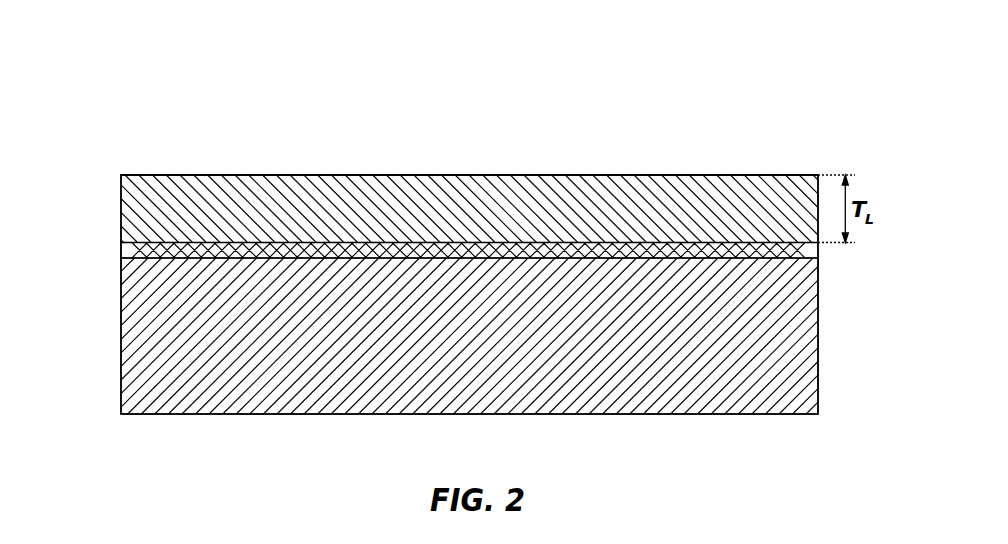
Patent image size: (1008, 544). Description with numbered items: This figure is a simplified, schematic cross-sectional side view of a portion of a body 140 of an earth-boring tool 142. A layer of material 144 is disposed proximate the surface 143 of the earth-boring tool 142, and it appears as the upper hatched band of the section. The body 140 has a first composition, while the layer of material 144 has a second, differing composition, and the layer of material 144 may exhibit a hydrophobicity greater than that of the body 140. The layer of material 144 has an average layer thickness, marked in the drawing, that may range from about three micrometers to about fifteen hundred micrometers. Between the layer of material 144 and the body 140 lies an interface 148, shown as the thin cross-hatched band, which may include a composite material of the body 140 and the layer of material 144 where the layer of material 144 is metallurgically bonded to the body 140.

The body 140 is at (795, 322).
The earth-boring tool 142 is at (292, 91).
The surface 143 is at (620, 150).
The layer of material 144 is at (150, 206).
The interface 148 is at (122, 250).